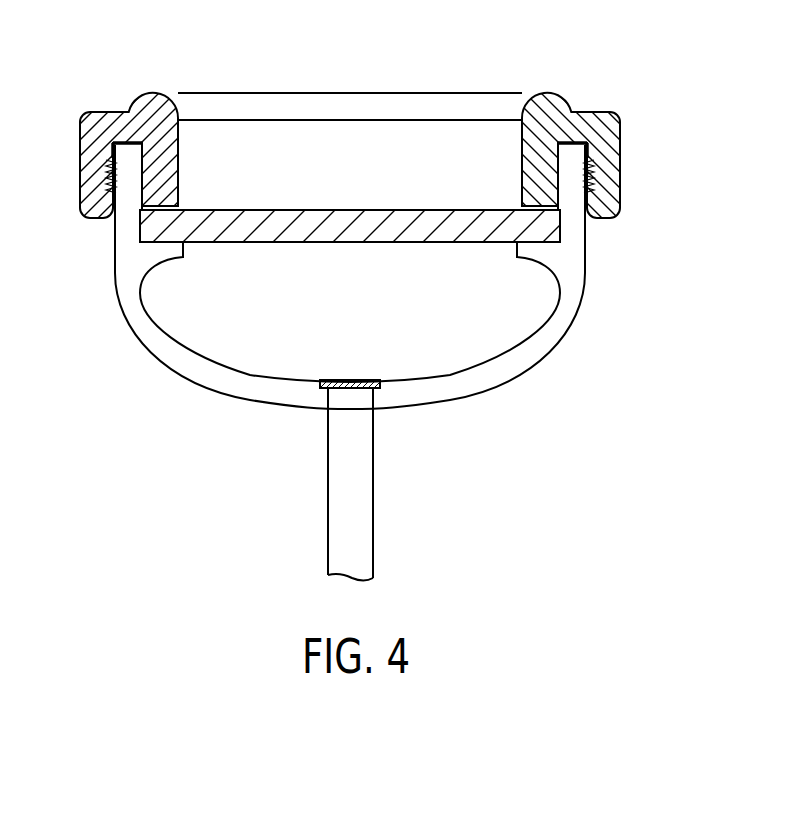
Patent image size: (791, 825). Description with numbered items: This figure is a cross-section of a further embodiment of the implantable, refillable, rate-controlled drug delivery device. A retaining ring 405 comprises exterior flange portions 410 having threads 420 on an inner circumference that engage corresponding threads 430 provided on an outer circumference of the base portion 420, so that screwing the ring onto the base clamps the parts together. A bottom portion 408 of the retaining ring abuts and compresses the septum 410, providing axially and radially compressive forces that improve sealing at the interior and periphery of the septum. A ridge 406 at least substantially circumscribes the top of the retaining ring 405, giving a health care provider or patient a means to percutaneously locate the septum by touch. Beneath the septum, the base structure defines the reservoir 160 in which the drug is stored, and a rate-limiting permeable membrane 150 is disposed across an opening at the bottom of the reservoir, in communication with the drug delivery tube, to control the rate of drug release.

The retaining ring 405 is at (578, 98).
The ridge 406 is at (152, 80).
The bottom portion of retaining ring 408 is at (113, 232).
The exterior flange portion 410 is at (603, 132).
The threads / base portion 420 is at (592, 182).
The corresponding threads 430 is at (576, 185).
The reservoir 160 is at (460, 324).
The rate-limiting permeable membrane 150 is at (322, 388).